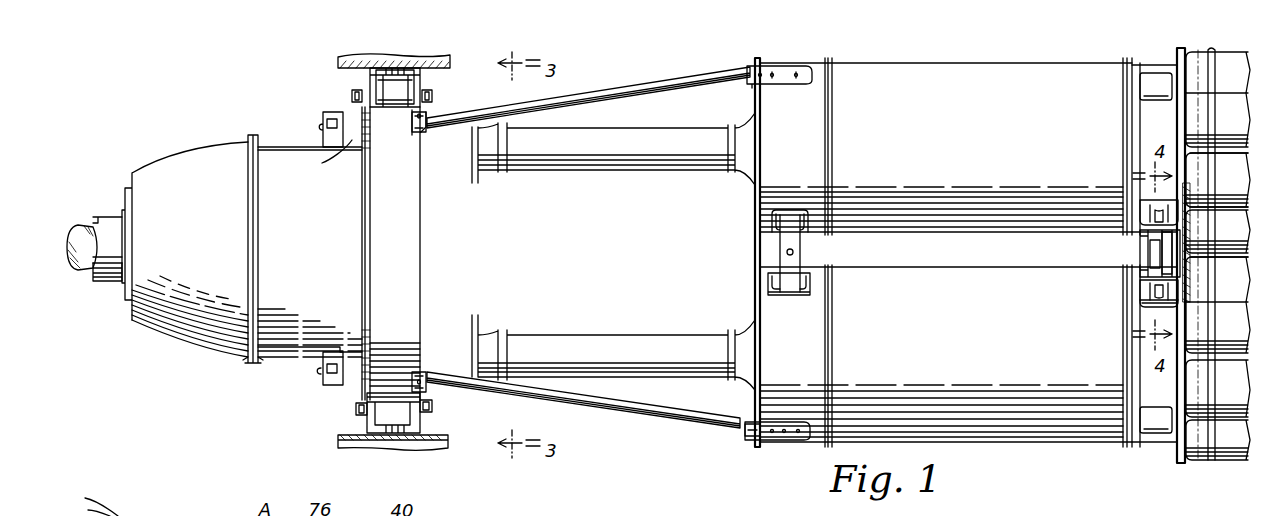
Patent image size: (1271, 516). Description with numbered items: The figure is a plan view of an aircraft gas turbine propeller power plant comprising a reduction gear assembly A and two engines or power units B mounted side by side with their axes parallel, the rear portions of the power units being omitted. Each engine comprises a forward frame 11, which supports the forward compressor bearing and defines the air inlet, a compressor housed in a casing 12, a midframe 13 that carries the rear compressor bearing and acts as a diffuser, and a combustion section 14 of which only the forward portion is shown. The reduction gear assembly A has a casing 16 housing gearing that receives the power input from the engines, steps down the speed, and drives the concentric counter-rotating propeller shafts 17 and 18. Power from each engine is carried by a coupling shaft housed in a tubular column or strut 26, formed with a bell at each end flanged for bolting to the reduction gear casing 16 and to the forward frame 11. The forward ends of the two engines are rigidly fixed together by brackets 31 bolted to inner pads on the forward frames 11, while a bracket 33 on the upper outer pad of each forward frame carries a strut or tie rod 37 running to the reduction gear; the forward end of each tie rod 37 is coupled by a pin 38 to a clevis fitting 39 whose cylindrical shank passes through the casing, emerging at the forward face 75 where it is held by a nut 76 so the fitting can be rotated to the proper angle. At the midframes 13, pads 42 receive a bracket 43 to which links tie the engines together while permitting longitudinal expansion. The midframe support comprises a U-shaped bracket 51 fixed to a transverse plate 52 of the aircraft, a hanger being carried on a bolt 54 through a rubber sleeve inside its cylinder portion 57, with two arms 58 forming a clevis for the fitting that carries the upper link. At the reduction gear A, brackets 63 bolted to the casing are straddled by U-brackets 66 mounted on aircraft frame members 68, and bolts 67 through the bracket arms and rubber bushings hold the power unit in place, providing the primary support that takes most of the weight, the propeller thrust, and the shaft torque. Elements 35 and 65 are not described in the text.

The forward frame 11 is at (757, 200).
The compressor casing 12 is at (905, 218).
The midframe 13 is at (1148, 115).
The combustion section 14 is at (1226, 447).
The reduction gear casing 16 is at (234, 350).
The propeller shaft 17 is at (110, 270).
The propeller shaft 18 is at (86, 235).
The tubular column or strut 26 is at (584, 160).
The bracket 31 is at (780, 245).
The bracket 33 is at (792, 85).
The lower bracket 35 is at (745, 430).
The strut or tie rod 37 is at (622, 96).
The pin 38 is at (433, 393).
The clevis fitting 39 is at (428, 372).
The pad 42 is at (1150, 88).
The bracket 43 is at (1146, 205).
The U-shaped bracket 51 is at (1150, 250).
The transverse plate 52 is at (1208, 196).
The bolt 54 is at (1148, 310).
The cylinder portion 57 is at (1150, 246).
The arms 58 is at (1205, 250).
The bracket 63 is at (375, 83).
The ring cap insert 65 is at (395, 87).
The U-bracket 66 is at (432, 95).
The bolt 67 is at (354, 95).
The frame member 68 is at (340, 64).
The shank forward end 75 is at (323, 375).
The nut 76 is at (330, 124).
The reduction gear assembly A is at (275, 134).
The engine or power unit B is at (1031, 240).